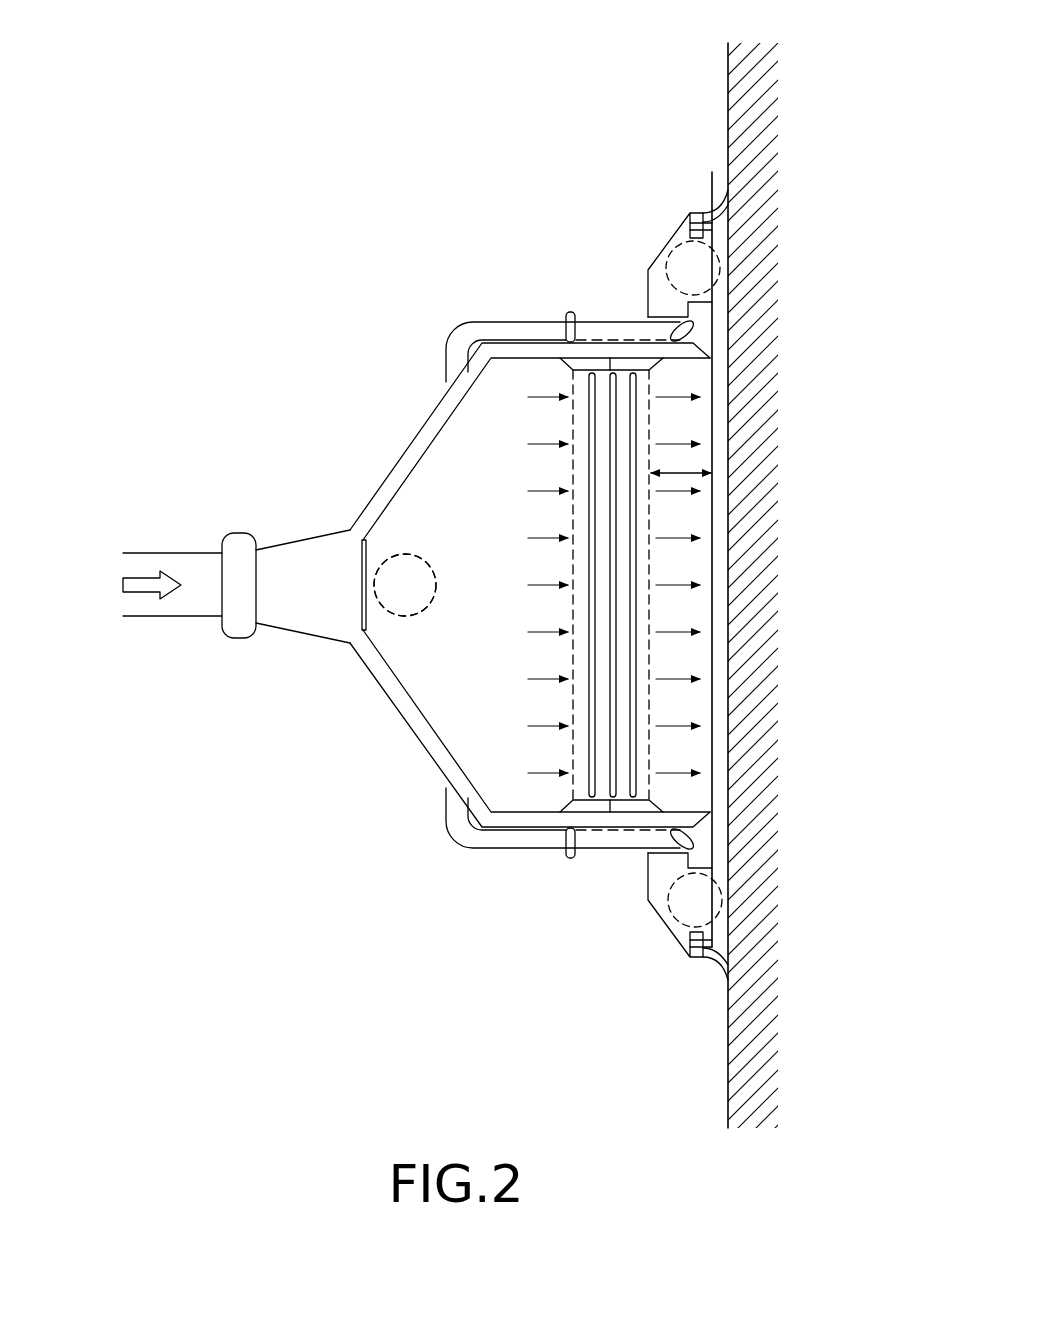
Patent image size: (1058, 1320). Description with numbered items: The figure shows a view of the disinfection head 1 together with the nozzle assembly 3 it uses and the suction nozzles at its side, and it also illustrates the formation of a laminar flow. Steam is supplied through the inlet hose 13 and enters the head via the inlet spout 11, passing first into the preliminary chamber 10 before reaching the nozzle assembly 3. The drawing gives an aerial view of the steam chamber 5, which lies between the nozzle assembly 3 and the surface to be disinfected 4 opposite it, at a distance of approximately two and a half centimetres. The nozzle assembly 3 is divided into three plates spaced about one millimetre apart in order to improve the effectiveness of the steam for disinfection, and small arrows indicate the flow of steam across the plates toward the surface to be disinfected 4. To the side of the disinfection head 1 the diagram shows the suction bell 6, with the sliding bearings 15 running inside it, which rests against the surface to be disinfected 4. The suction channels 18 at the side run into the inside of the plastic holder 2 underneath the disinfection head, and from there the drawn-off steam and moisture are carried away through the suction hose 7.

The disinfection head 1 is at (388, 700).
The plastic holder 2 is at (410, 560).
The suction hose 7 is at (405, 585).
The nozzle assembly 3 is at (602, 415).
The surface to be disinfected 4 is at (725, 1047).
The steam chamber 5 is at (689, 473).
The suction bell 6 is at (648, 270).
The preliminary chamber 10 is at (480, 447).
The inlet spout 11 is at (310, 533).
The inlet hose 13 is at (188, 553).
The sliding bearings 15 is at (692, 260).
The suction nozzle/channel 18 is at (501, 322).